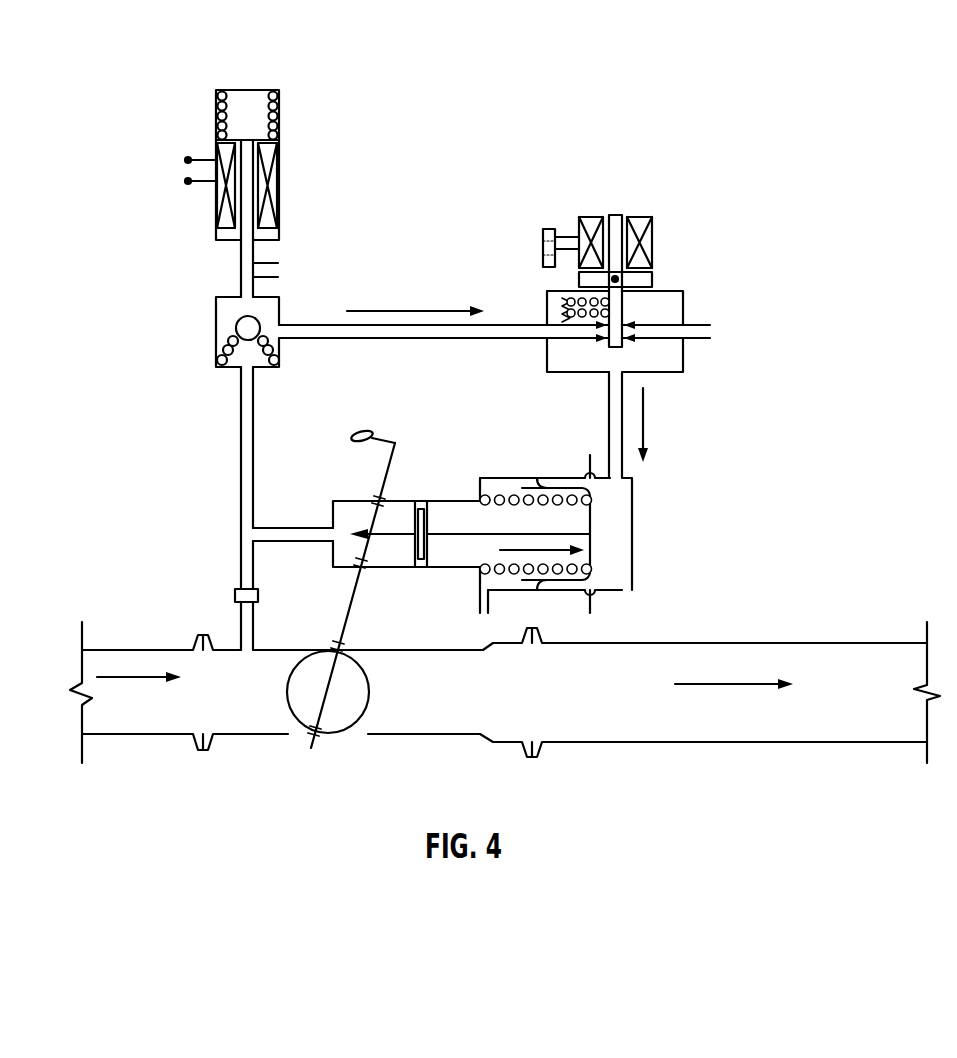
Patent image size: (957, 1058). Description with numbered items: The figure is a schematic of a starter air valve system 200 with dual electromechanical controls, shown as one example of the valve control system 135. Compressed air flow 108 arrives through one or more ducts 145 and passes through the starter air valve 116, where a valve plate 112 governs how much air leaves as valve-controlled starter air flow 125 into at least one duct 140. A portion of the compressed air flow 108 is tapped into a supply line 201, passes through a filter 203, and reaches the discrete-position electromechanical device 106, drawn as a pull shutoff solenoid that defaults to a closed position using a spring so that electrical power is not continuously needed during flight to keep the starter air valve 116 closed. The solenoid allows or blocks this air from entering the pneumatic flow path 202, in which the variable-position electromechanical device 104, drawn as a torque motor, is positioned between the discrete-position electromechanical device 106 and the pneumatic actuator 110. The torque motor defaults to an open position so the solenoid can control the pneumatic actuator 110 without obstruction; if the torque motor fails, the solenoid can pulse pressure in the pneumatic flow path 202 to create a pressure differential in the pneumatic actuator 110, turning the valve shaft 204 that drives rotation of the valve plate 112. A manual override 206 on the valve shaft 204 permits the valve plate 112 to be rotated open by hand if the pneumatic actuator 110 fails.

The starter air valve system 200 is at (397, 72).
The discrete-position electromechanical device 106 is at (216, 118).
The variable-position electromechanical device 104 is at (593, 218).
The valve control system 135 is at (727, 214).
The pneumatic flow path 202 is at (415, 310).
The pneumatic actuator 110 is at (517, 478).
The valve shaft 204 is at (390, 472).
The manual override 206 is at (352, 438).
The supply line 201 is at (241, 547).
The filter 203 is at (241, 590).
The compressed air flow 108 is at (138, 672).
The valve-controlled starter air flow 125 is at (733, 680).
The valve plate 112 is at (369, 695).
The ducts 145 is at (138, 735).
The starter air valve 116 is at (385, 735).
The duct 140 is at (788, 743).